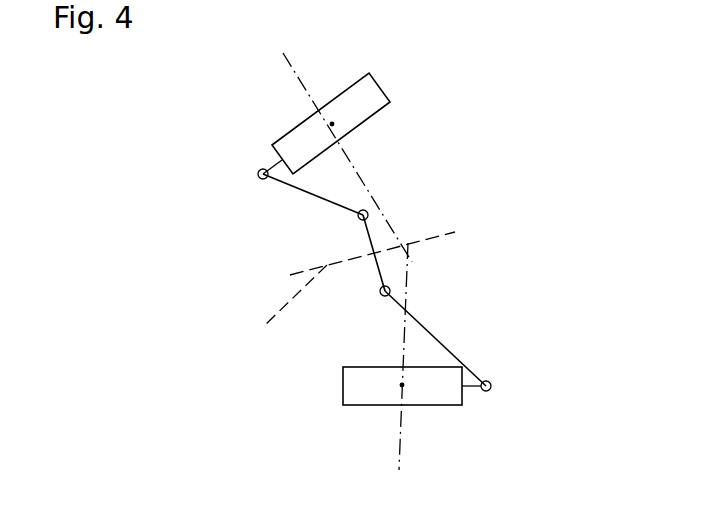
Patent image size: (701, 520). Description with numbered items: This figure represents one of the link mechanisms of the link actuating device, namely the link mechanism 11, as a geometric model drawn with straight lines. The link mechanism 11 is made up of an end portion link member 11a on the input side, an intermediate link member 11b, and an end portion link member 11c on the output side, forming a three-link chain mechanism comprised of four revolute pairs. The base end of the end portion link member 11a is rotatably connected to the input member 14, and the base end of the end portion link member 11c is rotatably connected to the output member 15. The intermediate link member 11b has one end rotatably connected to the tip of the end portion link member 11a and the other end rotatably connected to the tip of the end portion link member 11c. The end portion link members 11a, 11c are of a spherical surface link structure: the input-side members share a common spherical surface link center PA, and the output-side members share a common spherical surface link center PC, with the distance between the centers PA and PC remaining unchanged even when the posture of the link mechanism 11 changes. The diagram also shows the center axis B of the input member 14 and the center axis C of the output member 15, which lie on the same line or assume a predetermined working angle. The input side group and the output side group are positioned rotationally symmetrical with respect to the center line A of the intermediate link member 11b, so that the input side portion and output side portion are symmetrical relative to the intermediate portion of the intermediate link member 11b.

The link mechanism 11 is at (378, 280).
The end portion link member on the input side 11a is at (445, 343).
The intermediate link member 11b is at (378, 277).
The end portion link member on the output side 11c is at (322, 198).
The input member 14 is at (343, 387).
The output member 15 is at (375, 82).
The center line of the intermediate link member A is at (263, 328).
The center axis of the input member B is at (400, 453).
The center axis of the output member C is at (297, 65).
The spherical surface link center PA is at (403, 386).
The spherical surface link center PC is at (333, 125).